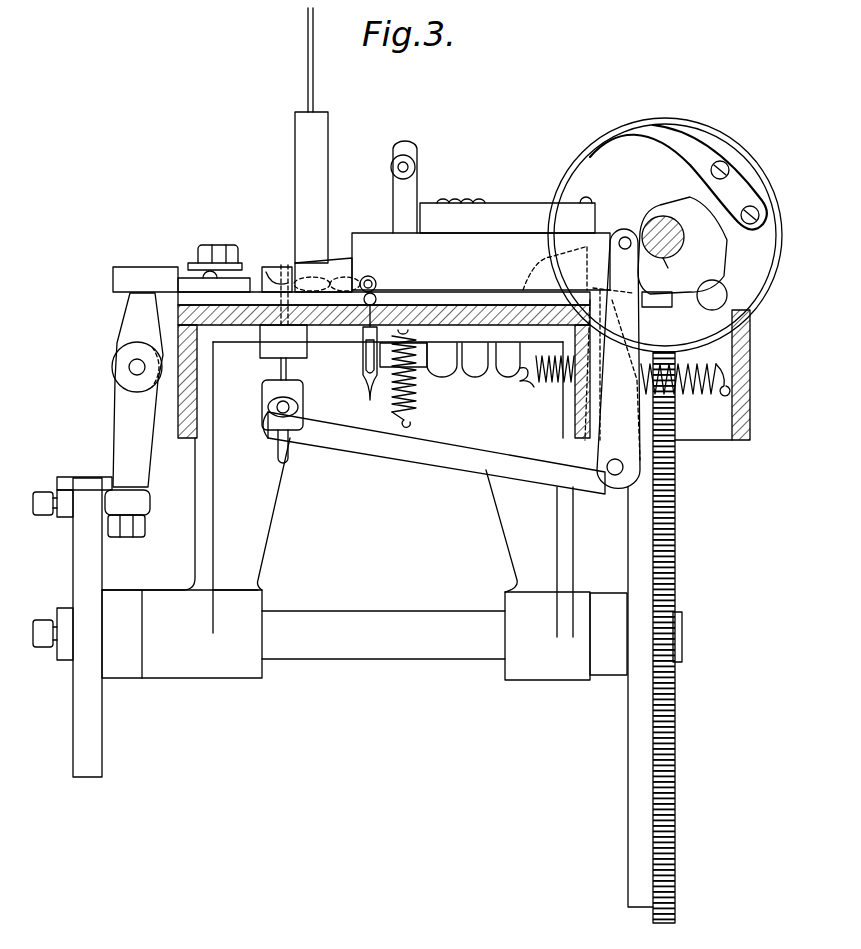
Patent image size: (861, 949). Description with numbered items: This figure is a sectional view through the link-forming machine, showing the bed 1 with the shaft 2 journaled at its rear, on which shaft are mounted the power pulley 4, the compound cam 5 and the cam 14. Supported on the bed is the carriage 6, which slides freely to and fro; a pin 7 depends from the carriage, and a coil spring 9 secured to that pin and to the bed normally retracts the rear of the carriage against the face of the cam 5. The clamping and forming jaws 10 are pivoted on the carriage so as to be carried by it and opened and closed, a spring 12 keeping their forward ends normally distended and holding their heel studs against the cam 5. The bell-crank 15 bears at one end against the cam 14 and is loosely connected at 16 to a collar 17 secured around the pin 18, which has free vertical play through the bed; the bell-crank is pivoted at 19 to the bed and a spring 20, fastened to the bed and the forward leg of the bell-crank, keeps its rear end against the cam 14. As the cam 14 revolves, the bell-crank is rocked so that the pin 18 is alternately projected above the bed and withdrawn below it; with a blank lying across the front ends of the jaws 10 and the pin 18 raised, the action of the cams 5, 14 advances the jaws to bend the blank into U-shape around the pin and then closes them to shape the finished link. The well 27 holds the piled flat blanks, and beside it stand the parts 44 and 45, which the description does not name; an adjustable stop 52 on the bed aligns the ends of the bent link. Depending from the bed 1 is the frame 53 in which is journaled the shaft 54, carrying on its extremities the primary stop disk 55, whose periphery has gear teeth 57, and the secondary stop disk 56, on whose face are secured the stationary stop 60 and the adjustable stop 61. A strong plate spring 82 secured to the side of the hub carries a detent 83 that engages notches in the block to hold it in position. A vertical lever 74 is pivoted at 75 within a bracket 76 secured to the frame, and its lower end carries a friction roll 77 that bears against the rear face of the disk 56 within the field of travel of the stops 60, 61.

The bed 1 is at (342, 344).
The shaft 2 is at (669, 271).
The power pulley 4 is at (770, 288).
The compound cam 5 is at (682, 236).
The carriage 6 is at (482, 370).
The pin 7 is at (516, 382).
The coil spring 9 is at (538, 385).
The clamping and forming jaws 10 is at (464, 263).
The spring 12 is at (507, 215).
The cam 14 is at (676, 237).
The bell-crank 15 is at (480, 461).
The loose connection 16 is at (266, 428).
The collar 17 is at (268, 387).
The pin 18 is at (276, 276).
The pivot 19 is at (613, 477).
The spring 20 is at (410, 395).
The well 27 is at (300, 188).
The ring 44 is at (391, 167).
The standard 45 is at (396, 200).
The adjustable stop 52 is at (192, 276).
The frame 53 is at (270, 549).
The shaft 54 is at (368, 612).
The primary stop disk 55 is at (672, 585).
The secondary stop disk 56 is at (103, 762).
The gear teeth 57 is at (676, 470).
The stationary stop 60 is at (75, 488).
The adjustable stop 61 is at (60, 608).
The vertical lever 74 is at (133, 318).
The pivot 75 is at (129, 367).
The bracket 76 is at (162, 390).
The friction roll 77 is at (150, 508).
The plate spring 82 is at (700, 150).
The detent 83 is at (672, 312).